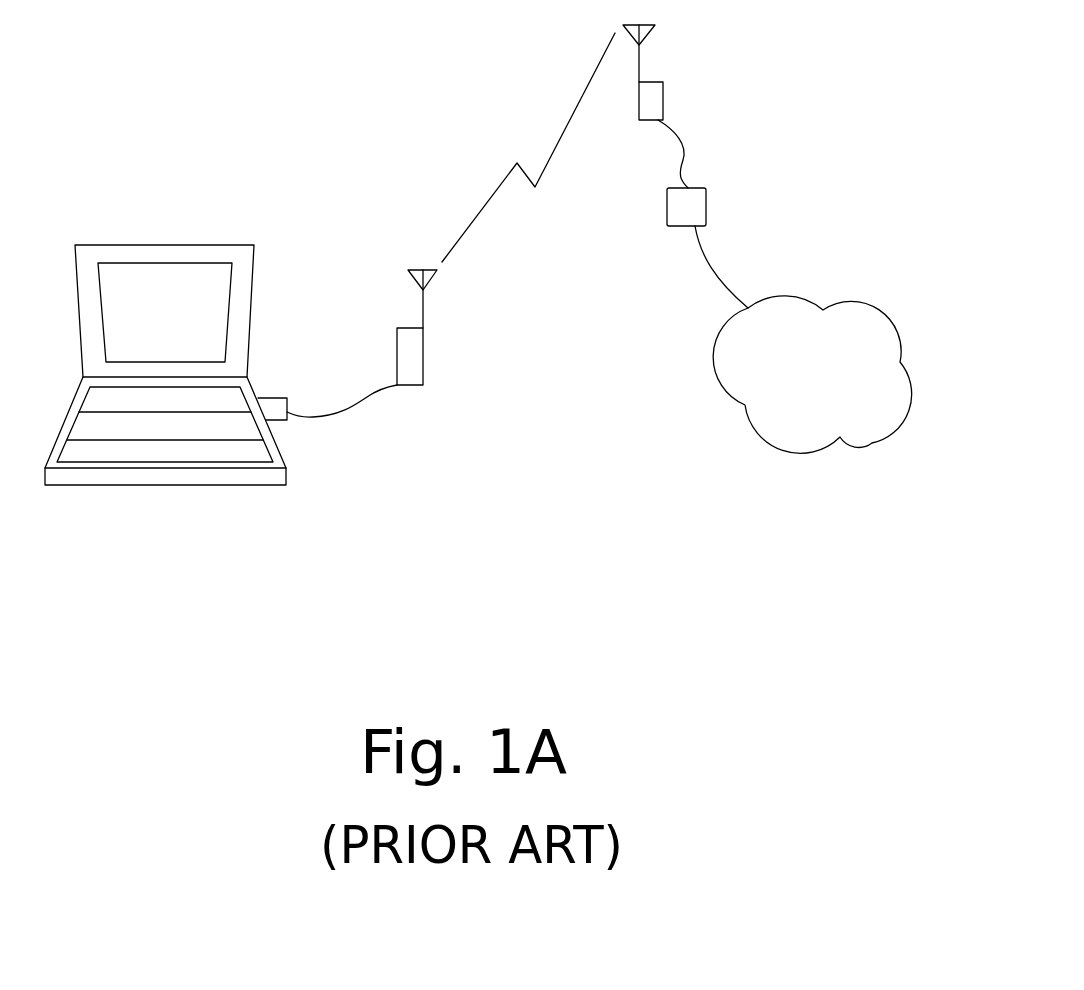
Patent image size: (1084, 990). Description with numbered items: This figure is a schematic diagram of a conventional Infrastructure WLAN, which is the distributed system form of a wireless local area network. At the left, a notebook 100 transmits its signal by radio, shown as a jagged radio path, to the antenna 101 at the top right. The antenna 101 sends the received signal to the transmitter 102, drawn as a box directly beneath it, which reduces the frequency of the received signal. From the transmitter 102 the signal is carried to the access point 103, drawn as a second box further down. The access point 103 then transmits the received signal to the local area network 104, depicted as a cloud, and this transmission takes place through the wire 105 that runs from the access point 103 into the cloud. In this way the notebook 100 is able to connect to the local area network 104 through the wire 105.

The notebook 100 is at (190, 485).
The antenna 101 is at (639, 62).
The transmitter 102 is at (663, 100).
The access point 103 is at (706, 202).
The local area network 104 is at (872, 443).
The wire 105 is at (717, 277).